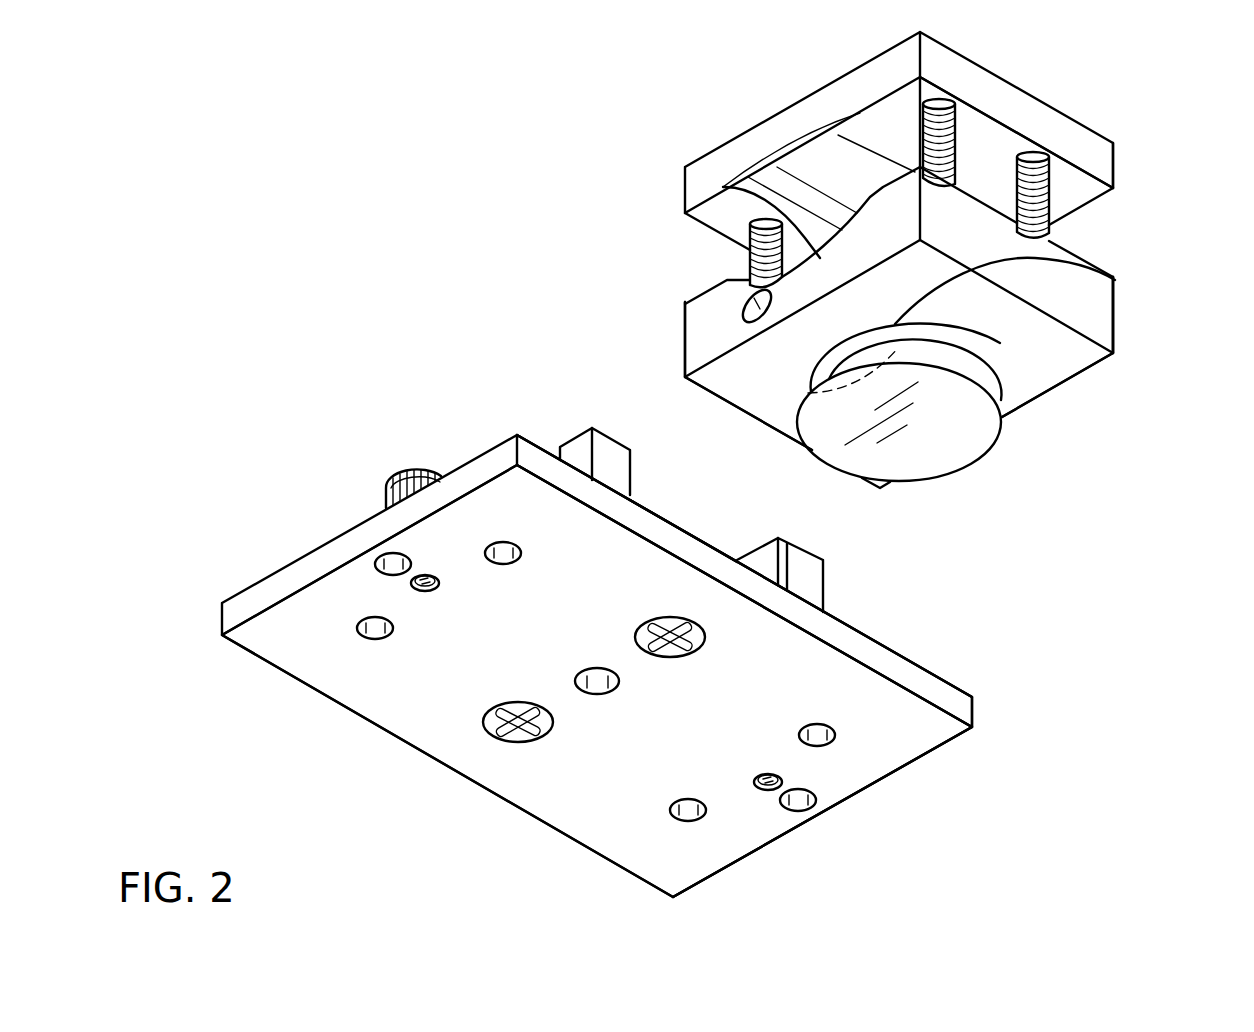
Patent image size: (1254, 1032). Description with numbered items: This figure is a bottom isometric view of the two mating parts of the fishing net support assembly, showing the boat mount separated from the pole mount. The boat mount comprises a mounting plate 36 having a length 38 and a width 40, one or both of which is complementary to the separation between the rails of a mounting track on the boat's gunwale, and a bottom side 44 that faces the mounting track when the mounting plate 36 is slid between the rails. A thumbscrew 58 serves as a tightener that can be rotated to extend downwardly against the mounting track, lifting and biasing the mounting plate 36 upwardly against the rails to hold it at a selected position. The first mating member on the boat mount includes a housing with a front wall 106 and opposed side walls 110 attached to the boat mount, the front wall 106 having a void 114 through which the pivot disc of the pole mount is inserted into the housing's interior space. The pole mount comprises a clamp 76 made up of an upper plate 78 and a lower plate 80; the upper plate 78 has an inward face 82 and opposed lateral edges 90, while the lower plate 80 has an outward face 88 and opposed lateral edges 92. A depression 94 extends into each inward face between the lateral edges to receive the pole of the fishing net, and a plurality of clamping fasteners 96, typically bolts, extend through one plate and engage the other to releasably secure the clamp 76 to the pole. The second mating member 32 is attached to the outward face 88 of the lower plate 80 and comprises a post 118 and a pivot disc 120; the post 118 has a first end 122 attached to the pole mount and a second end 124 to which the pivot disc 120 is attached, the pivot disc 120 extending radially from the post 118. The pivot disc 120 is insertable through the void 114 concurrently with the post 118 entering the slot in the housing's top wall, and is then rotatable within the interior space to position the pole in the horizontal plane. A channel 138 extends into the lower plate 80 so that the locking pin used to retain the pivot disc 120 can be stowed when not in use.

The second mating member 32 is at (993, 498).
The mounting plate 36 is at (763, 870).
The length 38 is at (878, 648).
The width 40 is at (863, 792).
The bottom side 44 is at (715, 741).
The thumbscrew 58 is at (410, 472).
The clamp 76 is at (1140, 232).
The upper plate 78 is at (1103, 145).
The lower plate 80 is at (1113, 307).
The inward face 82 is at (1010, 172).
The outward face 88 is at (1070, 368).
The opposed lateral edges 90 is at (880, 80).
The opposed lateral edges 92 is at (707, 327).
The depression 94 is at (805, 160).
The clamping fasteners 96 is at (952, 130).
The front wall 106 is at (722, 540).
The opposed side walls 110 is at (590, 426).
The void 114 is at (708, 510).
The post 118 is at (1000, 343).
The pivot disc 120 is at (923, 455).
The first end 122 is at (1118, 276).
The second end 124 is at (740, 375).
The channel 138 is at (745, 300).